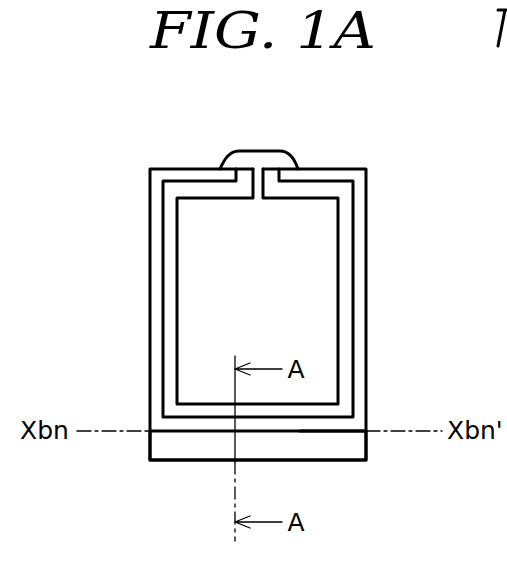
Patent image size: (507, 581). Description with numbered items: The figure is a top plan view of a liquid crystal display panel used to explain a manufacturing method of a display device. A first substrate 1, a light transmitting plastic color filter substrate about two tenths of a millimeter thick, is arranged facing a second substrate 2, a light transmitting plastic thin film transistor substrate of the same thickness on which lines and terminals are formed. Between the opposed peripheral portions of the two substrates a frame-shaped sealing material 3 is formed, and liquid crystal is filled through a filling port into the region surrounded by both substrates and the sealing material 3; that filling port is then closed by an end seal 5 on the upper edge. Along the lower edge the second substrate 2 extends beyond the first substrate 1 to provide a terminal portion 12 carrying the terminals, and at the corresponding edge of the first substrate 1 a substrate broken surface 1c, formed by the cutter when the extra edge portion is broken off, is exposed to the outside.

The first substrate 1 is at (360, 228).
The substrate broken surface 1c is at (325, 433).
The second substrate 2 is at (367, 360).
The sealing material 3 is at (332, 190).
The end seal 5 is at (257, 157).
The terminal portion 12 is at (180, 449).